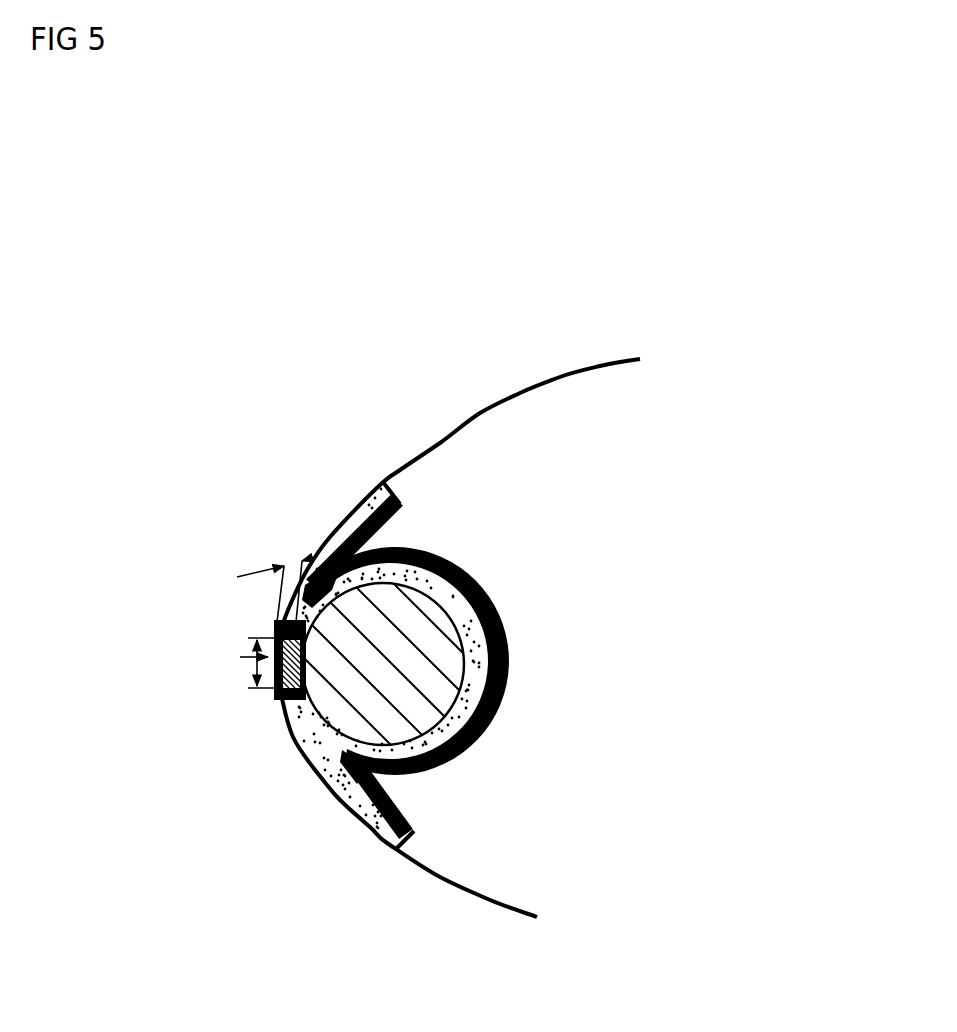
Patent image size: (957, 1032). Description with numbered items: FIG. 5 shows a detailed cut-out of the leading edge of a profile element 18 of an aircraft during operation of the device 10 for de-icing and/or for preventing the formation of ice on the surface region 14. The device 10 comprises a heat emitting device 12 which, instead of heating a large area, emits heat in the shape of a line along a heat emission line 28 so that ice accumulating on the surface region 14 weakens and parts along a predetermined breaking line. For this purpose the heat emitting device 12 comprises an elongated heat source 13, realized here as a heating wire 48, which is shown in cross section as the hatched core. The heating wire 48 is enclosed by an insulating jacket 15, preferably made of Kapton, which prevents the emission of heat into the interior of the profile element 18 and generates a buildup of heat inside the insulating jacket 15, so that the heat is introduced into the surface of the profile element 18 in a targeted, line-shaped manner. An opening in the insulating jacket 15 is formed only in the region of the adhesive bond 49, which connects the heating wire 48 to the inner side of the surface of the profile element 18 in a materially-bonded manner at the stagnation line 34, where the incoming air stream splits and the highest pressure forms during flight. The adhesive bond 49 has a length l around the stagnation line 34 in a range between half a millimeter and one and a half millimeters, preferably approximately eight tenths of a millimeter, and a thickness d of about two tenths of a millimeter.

The device for de-icing and/or preventing ice formation 10 is at (242, 475).
The heat emitting device 12 is at (281, 802).
The elongated heat source 13 is at (448, 650).
The surface region 14 is at (345, 495).
The insulating jacket 15 is at (504, 707).
The profile element 18 is at (609, 356).
The heat emission line 28 is at (240, 651).
The stagnation line 34 is at (240, 658).
The heating wire 48 is at (448, 752).
The adhesive bond 49 is at (273, 690).
The length of the adhesive bond l is at (247, 677).
The thickness of the adhesive bond d is at (274, 578).